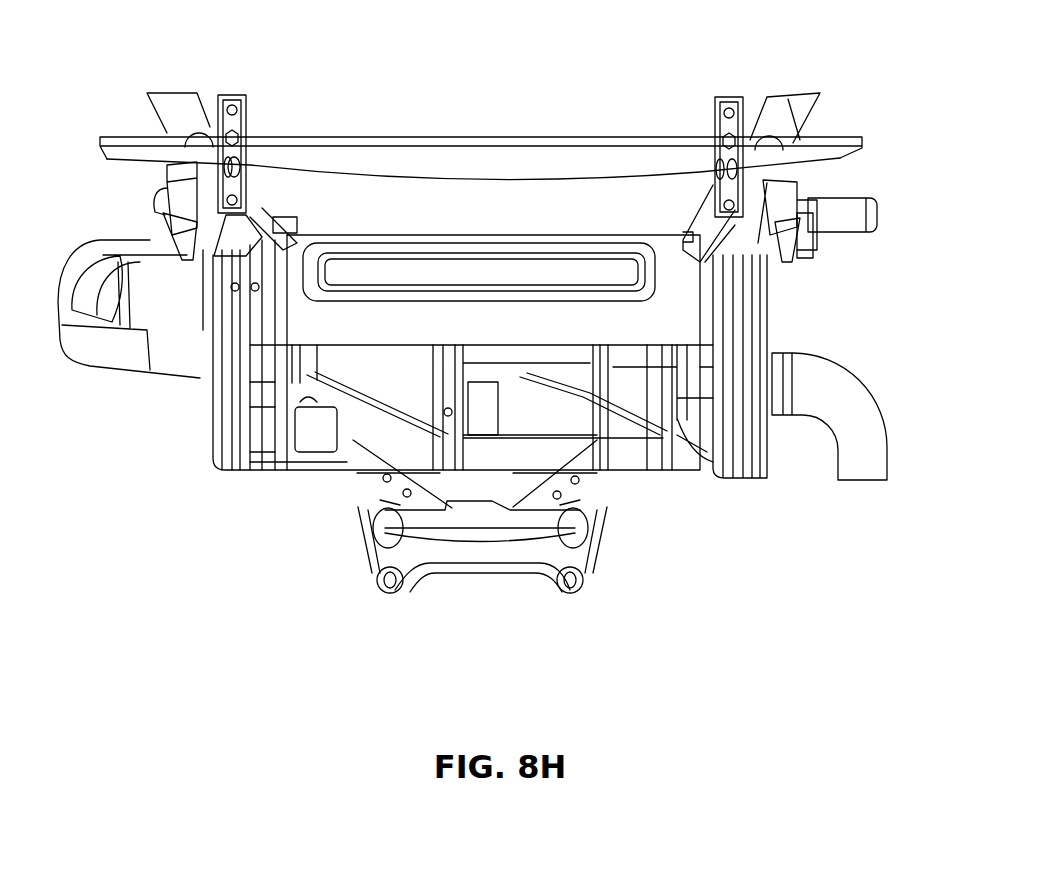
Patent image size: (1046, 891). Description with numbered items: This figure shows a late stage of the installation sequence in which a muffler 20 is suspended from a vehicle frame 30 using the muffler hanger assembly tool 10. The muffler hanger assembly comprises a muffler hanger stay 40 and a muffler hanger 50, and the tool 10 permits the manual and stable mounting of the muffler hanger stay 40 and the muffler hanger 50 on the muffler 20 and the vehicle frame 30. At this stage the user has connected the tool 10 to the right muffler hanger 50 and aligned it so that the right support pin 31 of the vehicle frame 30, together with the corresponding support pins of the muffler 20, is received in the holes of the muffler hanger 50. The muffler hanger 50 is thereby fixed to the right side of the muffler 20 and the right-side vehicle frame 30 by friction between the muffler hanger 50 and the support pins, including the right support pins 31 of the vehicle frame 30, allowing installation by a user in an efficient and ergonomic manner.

The tool 10 is at (863, 223).
The muffler 20 is at (302, 443).
The vehicle frame 30 is at (468, 153).
The support pin 31 is at (210, 197).
The muffler hanger stay 40 is at (187, 187).
The muffler hanger 50 is at (167, 235).